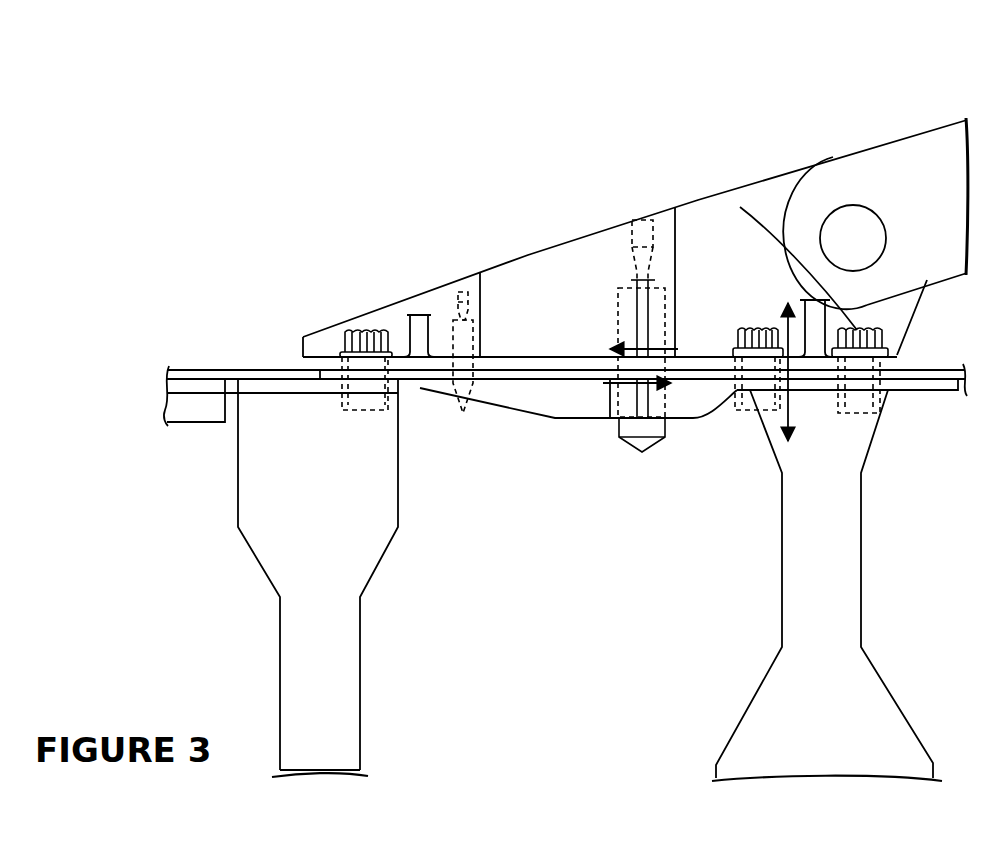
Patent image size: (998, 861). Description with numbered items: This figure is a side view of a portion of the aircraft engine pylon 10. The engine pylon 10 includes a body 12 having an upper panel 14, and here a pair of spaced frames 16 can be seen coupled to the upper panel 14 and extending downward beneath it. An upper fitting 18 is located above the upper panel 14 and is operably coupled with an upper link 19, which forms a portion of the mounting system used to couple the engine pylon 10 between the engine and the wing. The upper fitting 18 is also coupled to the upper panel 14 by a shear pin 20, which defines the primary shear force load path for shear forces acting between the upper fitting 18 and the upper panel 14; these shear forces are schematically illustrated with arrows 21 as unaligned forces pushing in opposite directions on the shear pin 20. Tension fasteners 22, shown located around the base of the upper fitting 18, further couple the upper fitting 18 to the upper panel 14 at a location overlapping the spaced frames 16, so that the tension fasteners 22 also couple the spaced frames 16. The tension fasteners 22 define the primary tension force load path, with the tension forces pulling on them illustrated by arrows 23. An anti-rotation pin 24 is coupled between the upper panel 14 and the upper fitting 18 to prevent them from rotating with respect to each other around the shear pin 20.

The engine pylon 10 is at (318, 194).
The body 12 is at (197, 366).
The upper panel 14 is at (247, 370).
The spaced frames 16 is at (347, 565).
The upper fitting 18 is at (526, 249).
The upper link 19 is at (927, 133).
The shear pin 20 is at (619, 297).
The arrows 21 is at (630, 356).
The tension fasteners 22 is at (365, 340).
The arrows 23 is at (788, 340).
The anti-rotation pin 24 is at (458, 307).